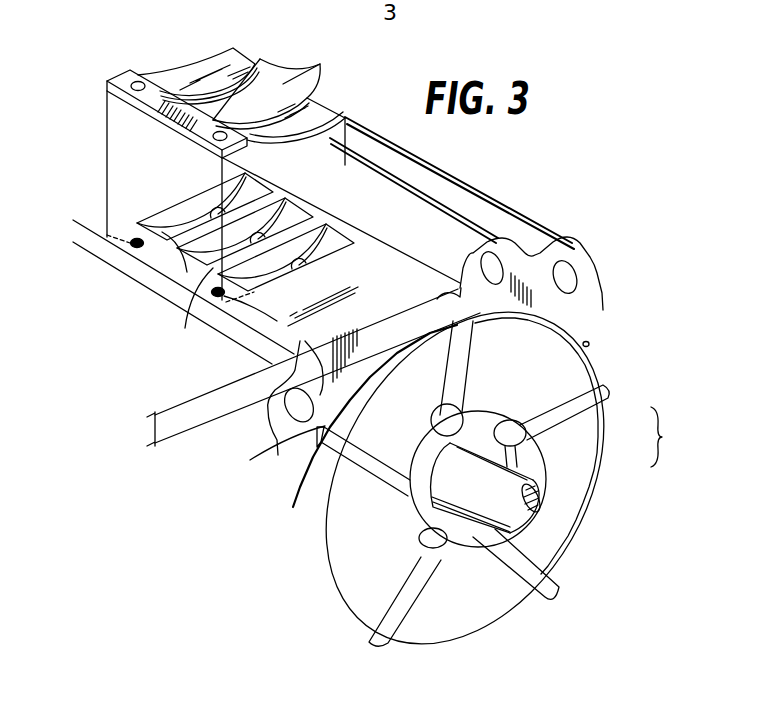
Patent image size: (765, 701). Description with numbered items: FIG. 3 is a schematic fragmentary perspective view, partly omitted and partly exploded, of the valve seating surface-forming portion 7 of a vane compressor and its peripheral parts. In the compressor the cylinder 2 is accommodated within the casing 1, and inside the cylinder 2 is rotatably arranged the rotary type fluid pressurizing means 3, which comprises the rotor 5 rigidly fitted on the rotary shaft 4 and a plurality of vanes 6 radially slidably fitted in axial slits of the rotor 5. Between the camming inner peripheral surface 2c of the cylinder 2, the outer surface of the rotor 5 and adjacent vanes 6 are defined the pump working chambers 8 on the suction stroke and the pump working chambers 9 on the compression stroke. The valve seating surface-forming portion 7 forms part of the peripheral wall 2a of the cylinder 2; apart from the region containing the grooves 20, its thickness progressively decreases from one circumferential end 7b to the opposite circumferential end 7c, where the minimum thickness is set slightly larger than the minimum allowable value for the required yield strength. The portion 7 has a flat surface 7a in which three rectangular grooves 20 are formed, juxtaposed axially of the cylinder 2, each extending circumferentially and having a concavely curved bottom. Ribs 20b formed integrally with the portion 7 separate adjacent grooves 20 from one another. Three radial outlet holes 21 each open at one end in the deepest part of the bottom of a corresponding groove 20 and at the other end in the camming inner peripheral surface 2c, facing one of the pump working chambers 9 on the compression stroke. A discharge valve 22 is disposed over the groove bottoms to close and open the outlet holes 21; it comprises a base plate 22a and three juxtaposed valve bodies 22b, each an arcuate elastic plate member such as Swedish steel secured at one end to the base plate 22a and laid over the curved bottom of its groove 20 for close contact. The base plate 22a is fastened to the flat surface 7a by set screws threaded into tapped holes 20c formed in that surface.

The casing 1 is at (152, 436).
The cylinder 2 is at (603, 291).
The peripheral wall 2a is at (523, 270).
The camming inner peripheral surface 2c is at (590, 343).
The rotary type fluid pressurizing means 3 is at (662, 437).
The rotary shaft 4 is at (513, 507).
The rotor 5 is at (585, 455).
The vanes 6 is at (607, 407).
The valve seating surface-forming portion 7 is at (368, 365).
The flat surface 7a is at (403, 275).
The one circumferential end 7b is at (312, 389).
The opposite circumferential end 7c is at (437, 299).
The pump working chambers on the suction stroke 8 is at (310, 493).
The pump working chambers on the compression stroke 9 is at (277, 443).
The rectangular grooves 20 is at (120, 269).
The ribs 20b is at (178, 240).
The tapped holes 20c is at (133, 237).
The radial outlet holes 21 is at (262, 183).
The discharge valve 22 is at (194, 63).
The base plate 22a is at (152, 102).
The valve bodies 22b is at (320, 65).